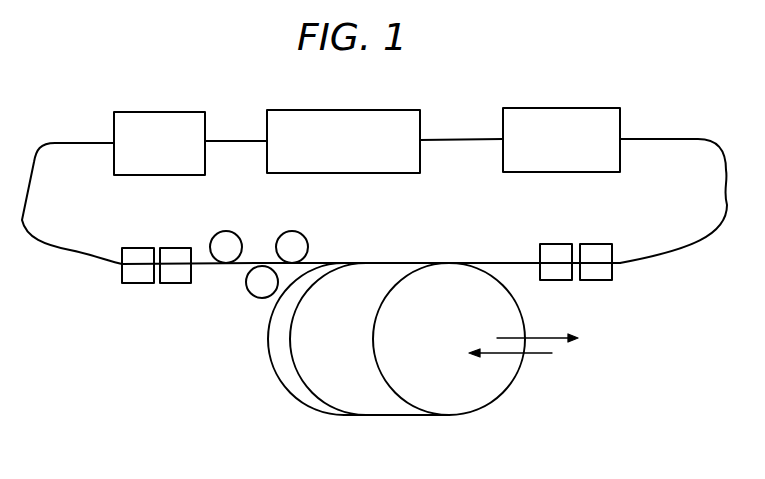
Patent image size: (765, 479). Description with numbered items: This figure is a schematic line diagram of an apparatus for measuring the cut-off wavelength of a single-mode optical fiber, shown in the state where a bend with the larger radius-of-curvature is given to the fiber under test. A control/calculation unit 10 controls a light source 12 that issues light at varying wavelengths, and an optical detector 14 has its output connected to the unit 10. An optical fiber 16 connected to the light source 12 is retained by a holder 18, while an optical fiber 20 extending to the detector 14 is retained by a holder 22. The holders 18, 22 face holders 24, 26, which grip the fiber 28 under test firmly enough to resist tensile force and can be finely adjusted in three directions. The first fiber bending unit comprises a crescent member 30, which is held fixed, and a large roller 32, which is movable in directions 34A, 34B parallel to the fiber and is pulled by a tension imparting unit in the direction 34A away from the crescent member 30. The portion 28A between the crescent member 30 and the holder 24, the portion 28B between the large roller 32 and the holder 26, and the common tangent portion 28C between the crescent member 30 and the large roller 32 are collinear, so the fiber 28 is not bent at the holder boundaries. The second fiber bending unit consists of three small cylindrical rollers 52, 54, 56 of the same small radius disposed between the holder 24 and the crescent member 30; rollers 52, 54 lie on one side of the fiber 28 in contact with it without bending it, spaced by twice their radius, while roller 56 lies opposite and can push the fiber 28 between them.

The control/calculation unit 10 is at (395, 110).
The light source 12 is at (191, 112).
The optical detector 14 is at (595, 108).
The optical fiber 16 is at (25, 220).
The holder 18 is at (143, 249).
The optical fiber 20 is at (722, 179).
The holder 22 is at (600, 244).
The holder 24 is at (178, 284).
The holder 26 is at (564, 280).
The fiber under test 28 is at (489, 258).
The portion of the fiber 28A is at (316, 263).
The portion of the fiber 28B is at (524, 262).
The common tangent portion 28C is at (390, 263).
The crescent member 30 is at (283, 370).
The large roller 32 is at (498, 373).
The direction 34A is at (549, 338).
The direction 34B is at (495, 352).
The small roller 52 is at (214, 236).
The small roller 54 is at (279, 236).
The small roller 56 is at (250, 295).